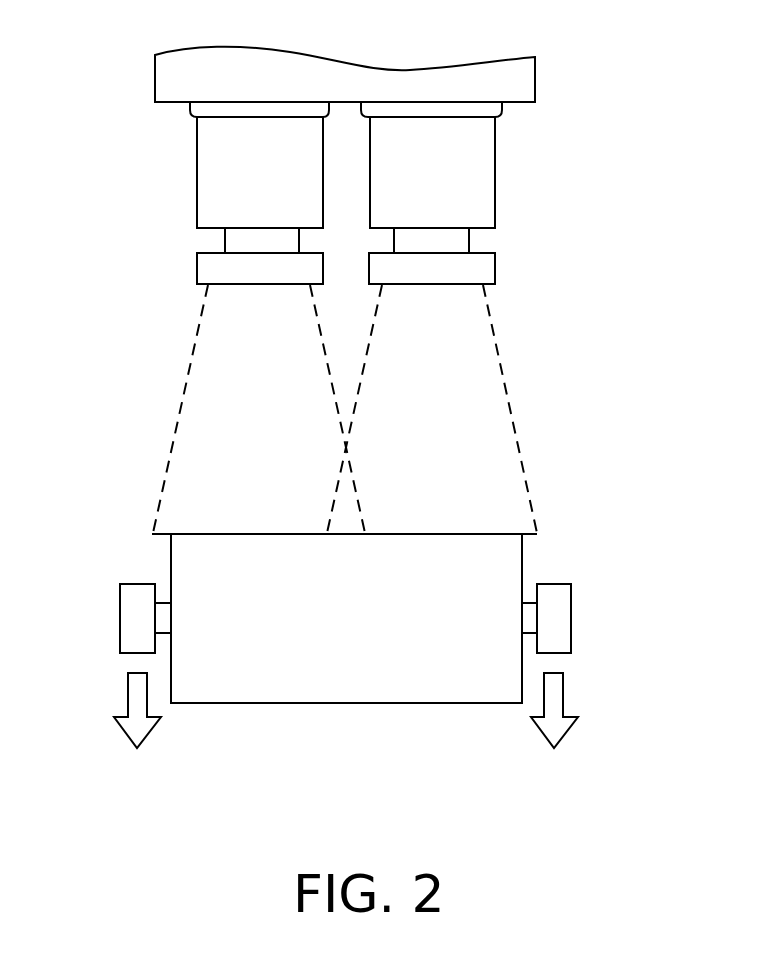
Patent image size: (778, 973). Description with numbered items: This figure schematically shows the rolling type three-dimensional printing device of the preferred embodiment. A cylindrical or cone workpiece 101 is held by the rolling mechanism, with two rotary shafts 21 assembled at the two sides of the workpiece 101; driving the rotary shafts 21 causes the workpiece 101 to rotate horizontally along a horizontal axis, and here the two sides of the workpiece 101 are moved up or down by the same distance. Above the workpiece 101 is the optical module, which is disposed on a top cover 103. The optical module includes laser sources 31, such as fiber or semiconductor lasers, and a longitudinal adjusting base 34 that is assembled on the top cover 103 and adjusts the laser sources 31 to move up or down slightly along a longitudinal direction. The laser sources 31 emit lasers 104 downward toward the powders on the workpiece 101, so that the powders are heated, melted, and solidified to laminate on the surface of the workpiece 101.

The top cover 103 is at (535, 82).
The longitudinal adjusting base 34 is at (190, 104).
The laser sources 31 is at (197, 173).
The lasers 104 is at (183, 370).
The workpiece 101 is at (497, 703).
The rotary shafts 21 is at (120, 620).